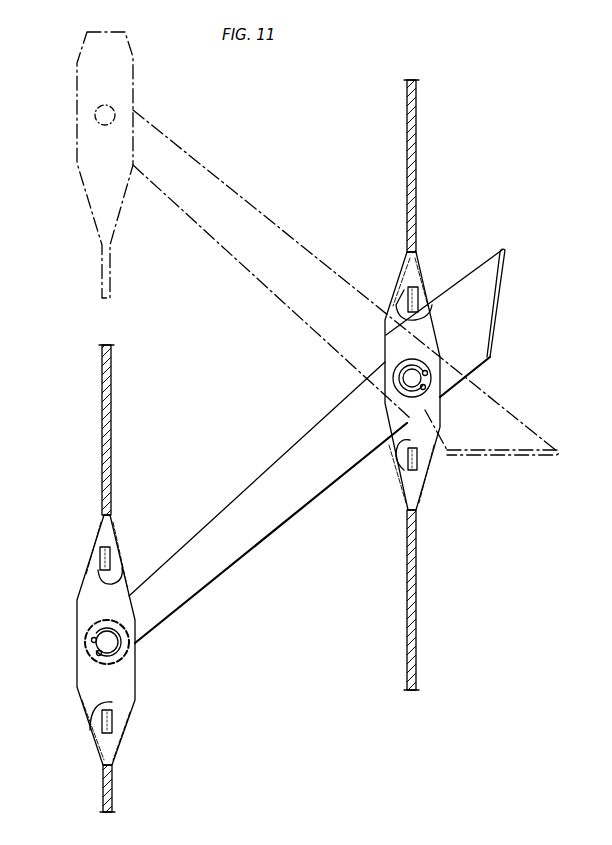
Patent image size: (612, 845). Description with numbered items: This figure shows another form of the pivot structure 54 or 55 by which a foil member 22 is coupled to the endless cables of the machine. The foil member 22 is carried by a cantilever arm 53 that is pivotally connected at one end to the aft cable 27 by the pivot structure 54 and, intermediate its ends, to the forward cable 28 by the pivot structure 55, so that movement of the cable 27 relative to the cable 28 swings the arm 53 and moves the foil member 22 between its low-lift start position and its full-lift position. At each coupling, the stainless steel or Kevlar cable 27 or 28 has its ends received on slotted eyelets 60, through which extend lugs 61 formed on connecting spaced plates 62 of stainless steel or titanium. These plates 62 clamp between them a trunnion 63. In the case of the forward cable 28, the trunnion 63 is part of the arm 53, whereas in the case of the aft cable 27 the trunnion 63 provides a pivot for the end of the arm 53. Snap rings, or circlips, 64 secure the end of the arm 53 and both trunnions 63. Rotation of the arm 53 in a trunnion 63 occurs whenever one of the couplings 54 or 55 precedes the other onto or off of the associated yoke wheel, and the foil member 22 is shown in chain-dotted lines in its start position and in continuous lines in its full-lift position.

The foil member 22 is at (505, 257).
The cable 27 is at (110, 402).
The cable 28 is at (415, 128).
The cantilever arm 53 is at (288, 457).
The pivot structure 54 is at (137, 660).
The pivot structure 55 is at (440, 402).
The slotted eyelet 60 is at (412, 272).
The lug 61 is at (400, 462).
The connecting spaced plate 62 is at (394, 301).
The trunnion 63 is at (400, 383).
The snap ring 64 is at (428, 364).